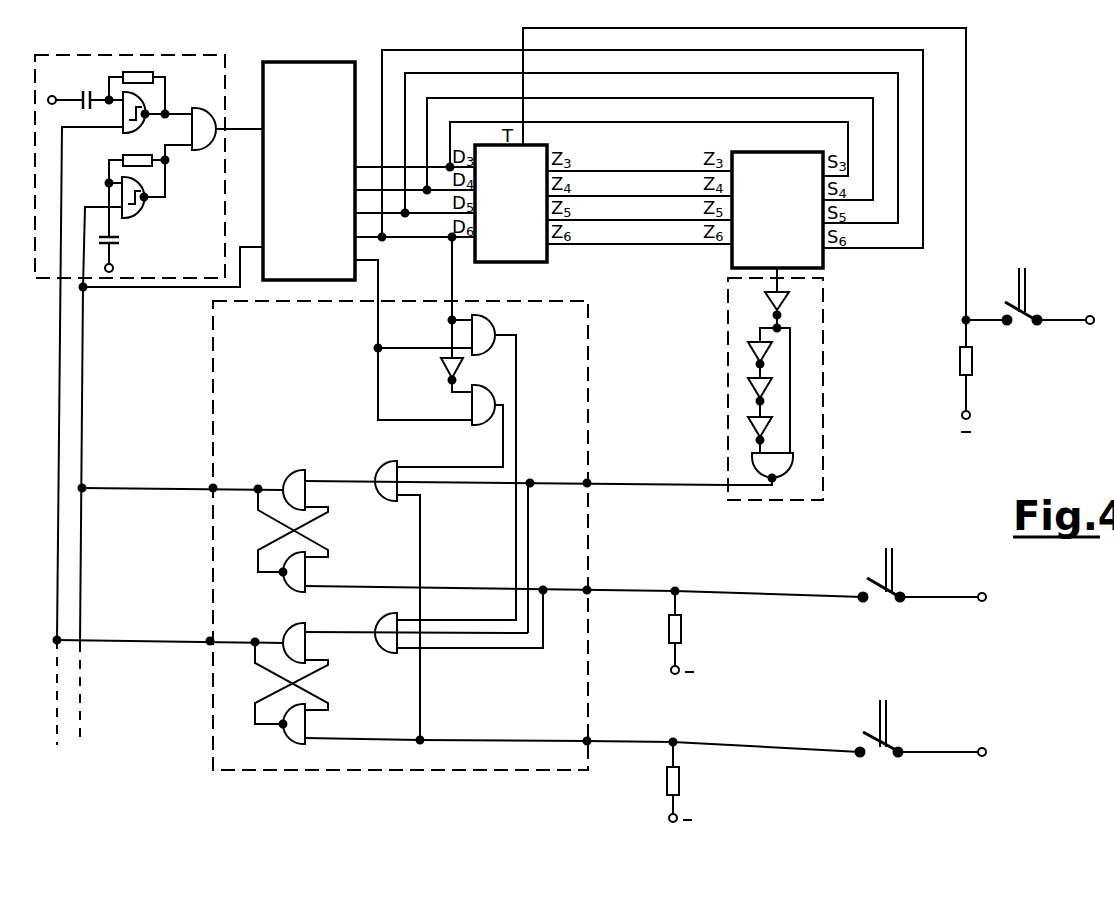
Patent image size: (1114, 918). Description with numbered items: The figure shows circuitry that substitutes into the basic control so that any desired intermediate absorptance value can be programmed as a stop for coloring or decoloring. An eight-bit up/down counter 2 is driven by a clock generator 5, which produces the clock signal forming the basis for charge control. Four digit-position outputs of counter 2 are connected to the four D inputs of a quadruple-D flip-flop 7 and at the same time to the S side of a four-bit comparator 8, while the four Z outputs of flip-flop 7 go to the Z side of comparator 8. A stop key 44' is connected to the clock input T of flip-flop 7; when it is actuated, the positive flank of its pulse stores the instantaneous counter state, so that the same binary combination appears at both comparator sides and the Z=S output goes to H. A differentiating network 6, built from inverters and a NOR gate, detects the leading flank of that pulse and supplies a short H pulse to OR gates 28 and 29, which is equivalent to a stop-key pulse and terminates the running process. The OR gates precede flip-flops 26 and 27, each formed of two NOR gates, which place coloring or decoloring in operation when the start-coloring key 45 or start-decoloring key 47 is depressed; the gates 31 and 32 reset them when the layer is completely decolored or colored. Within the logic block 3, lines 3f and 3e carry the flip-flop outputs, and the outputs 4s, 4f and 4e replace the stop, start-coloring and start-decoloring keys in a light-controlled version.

The counter 2 is at (264, 68).
The evaluation logic circuit 3 is at (190, 720).
The clock generator 5 is at (188, 54).
The differentiating network 6 is at (823, 352).
The quadruple-D flip-flop 7 is at (540, 158).
The four-bit comparator 8 is at (781, 164).
The flip-flop 26 is at (270, 448).
The flip-flop 27 is at (268, 621).
The OR gate 28 is at (372, 477).
The OR gate 29 is at (375, 652).
The AND gate 31 is at (497, 323).
The AND gate 32 is at (470, 408).
The output line 3f is at (212, 488).
The output line 3e is at (212, 641).
The output 4s is at (588, 488).
The output 4f is at (587, 596).
The output 4e is at (588, 749).
The stop key 44' is at (1035, 350).
The start-coloring key 45 is at (900, 592).
The start-decoloring key 47 is at (893, 748).